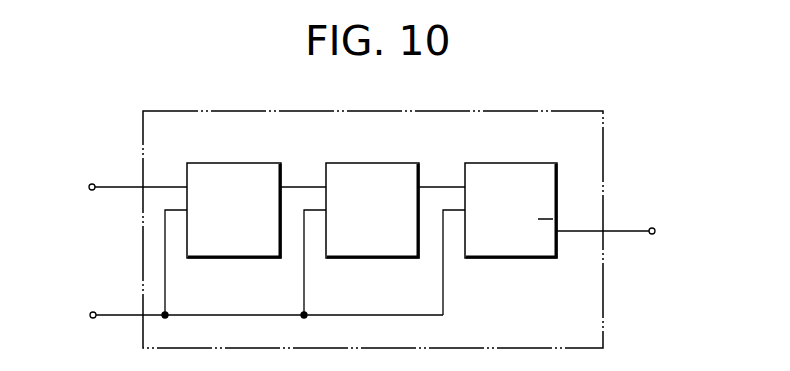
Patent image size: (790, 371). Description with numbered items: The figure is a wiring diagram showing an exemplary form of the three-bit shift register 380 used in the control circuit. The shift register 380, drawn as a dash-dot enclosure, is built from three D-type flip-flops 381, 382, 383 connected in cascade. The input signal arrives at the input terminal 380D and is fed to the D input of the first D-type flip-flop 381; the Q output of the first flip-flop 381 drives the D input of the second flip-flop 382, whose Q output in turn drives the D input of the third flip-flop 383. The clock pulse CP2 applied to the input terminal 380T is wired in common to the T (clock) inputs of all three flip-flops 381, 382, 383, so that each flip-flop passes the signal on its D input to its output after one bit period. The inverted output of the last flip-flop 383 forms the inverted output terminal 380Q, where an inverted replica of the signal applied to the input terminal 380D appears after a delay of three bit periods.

The 3-bit shift register 380 is at (603, 332).
The input terminal 380D is at (92, 184).
The input terminal for the clock pulse CP2 380T is at (93, 312).
The inverted output terminal 380Q is at (695, 177).
The D-type flip-flop 381 is at (220, 258).
The D-type flip-flop 382 is at (365, 258).
The D-type flip-flop 383 is at (500, 258).